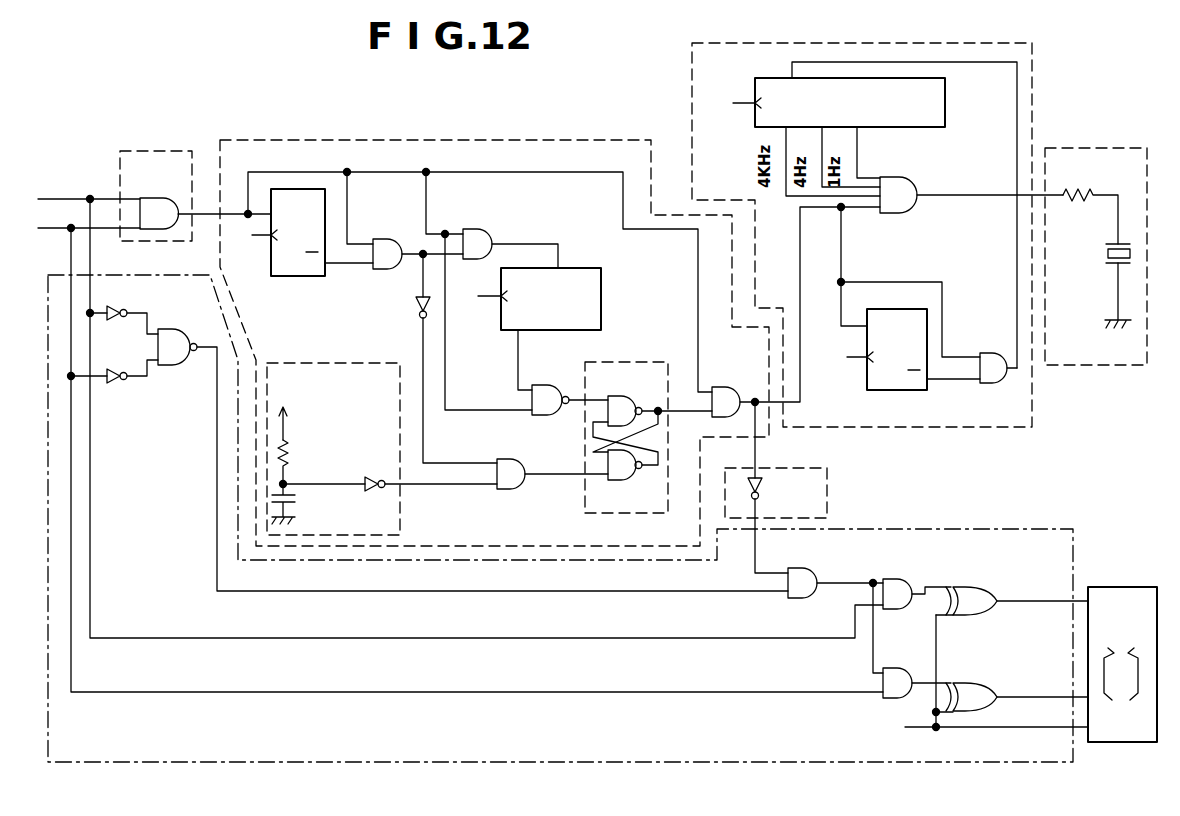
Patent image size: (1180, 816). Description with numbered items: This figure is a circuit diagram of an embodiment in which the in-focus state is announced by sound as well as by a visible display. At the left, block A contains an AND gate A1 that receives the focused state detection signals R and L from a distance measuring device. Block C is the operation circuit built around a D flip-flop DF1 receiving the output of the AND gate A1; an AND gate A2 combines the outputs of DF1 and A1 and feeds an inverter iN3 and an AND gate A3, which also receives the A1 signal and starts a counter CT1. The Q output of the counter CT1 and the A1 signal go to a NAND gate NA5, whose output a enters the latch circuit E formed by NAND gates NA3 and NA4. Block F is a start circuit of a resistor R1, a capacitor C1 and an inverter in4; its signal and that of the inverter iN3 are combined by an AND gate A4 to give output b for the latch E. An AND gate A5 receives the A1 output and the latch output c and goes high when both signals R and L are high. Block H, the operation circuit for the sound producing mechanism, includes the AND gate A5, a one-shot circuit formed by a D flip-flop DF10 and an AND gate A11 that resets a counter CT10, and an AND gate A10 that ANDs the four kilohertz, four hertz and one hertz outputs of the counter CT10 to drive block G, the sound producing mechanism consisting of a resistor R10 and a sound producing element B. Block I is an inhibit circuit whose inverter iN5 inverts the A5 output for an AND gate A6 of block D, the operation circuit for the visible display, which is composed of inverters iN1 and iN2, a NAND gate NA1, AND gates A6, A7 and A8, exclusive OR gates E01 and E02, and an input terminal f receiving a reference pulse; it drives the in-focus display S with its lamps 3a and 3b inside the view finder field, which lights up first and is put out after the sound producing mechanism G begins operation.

The focused state detection signal R is at (453, 415).
The focused state detection signal L is at (453, 457).
The block A is at (162, 150).
The AND gate A1 is at (164, 198).
The operation circuit for the first in-focus state display element C is at (224, 140).
The D flip-flop DF1 is at (290, 278).
The AND gate A2 is at (384, 238).
The inverter iN3 is at (415, 305).
The AND gate A3 is at (470, 229).
The counter CT1 is at (572, 268).
The NAND gate NA5 is at (540, 384).
The latch circuit E is at (630, 362).
The NAND gate NA3 is at (640, 389).
The NAND gate NA4 is at (620, 480).
The AND gate A4 is at (505, 459).
The start circuit F is at (402, 515).
The resistor R1 is at (292, 452).
The capacitor C1 is at (296, 500).
The inverter in4 is at (370, 477).
The inverter iN1 is at (112, 310).
The inverter iN2 is at (112, 384).
The NAND gate NA1 is at (178, 329).
The AND gate A5 is at (720, 386).
The inhibit circuit I is at (800, 468).
The inverter iN5 is at (764, 486).
The operation circuit for the sound producing mechanism H is at (1034, 73).
The counter CT10 is at (948, 97).
The AND gate A10 is at (895, 177).
The D flip-flop DF10 is at (880, 392).
The AND gate A11 is at (982, 353).
The sound producing mechanism G is at (1102, 148).
The resistor R10 is at (1080, 190).
The sound producing element B is at (1104, 254).
The operation circuit for second in-focus state display elements D is at (918, 529).
The AND gate A6 is at (813, 576).
The AND gate A7 is at (900, 578).
The AND gate A8 is at (900, 667).
The exclusive OR gate E01 is at (978, 585).
The exclusive OR gate E02 is at (978, 681).
The input terminal f is at (989, 739).
The in-focus display S is at (1112, 586).
The left lamp 3a is at (1108, 648).
The right lamp 3b is at (1134, 648).